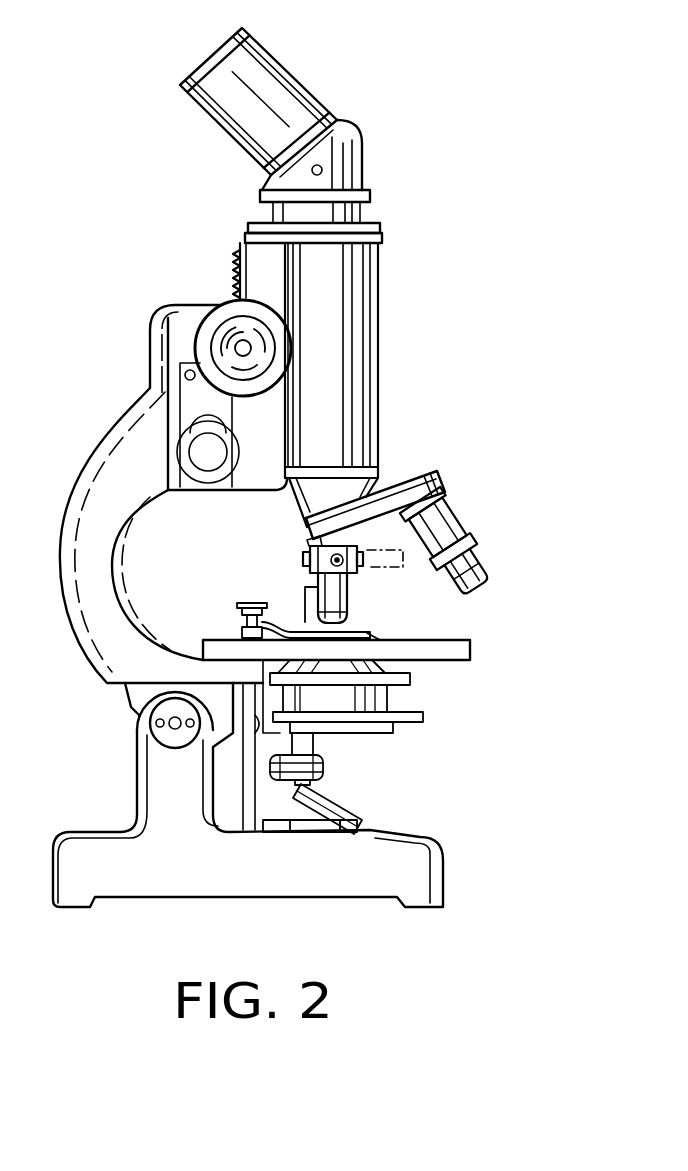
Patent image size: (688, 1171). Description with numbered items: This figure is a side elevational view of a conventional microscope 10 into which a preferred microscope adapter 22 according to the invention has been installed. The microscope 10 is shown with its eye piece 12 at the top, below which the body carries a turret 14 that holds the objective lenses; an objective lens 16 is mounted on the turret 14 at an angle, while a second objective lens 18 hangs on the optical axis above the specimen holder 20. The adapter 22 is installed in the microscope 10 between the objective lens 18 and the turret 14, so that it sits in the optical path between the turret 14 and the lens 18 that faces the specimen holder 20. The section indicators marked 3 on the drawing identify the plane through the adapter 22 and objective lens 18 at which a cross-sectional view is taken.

The section line 3- 3 is at (306, 536).
The microscope 10 is at (176, 333).
The eye piece 12 is at (290, 82).
The turret 14 is at (440, 482).
The objective lens 16 is at (458, 522).
The objective lens 18 is at (352, 607).
The specimen holder 20 is at (370, 633).
The microscope adapter 22 is at (307, 560).